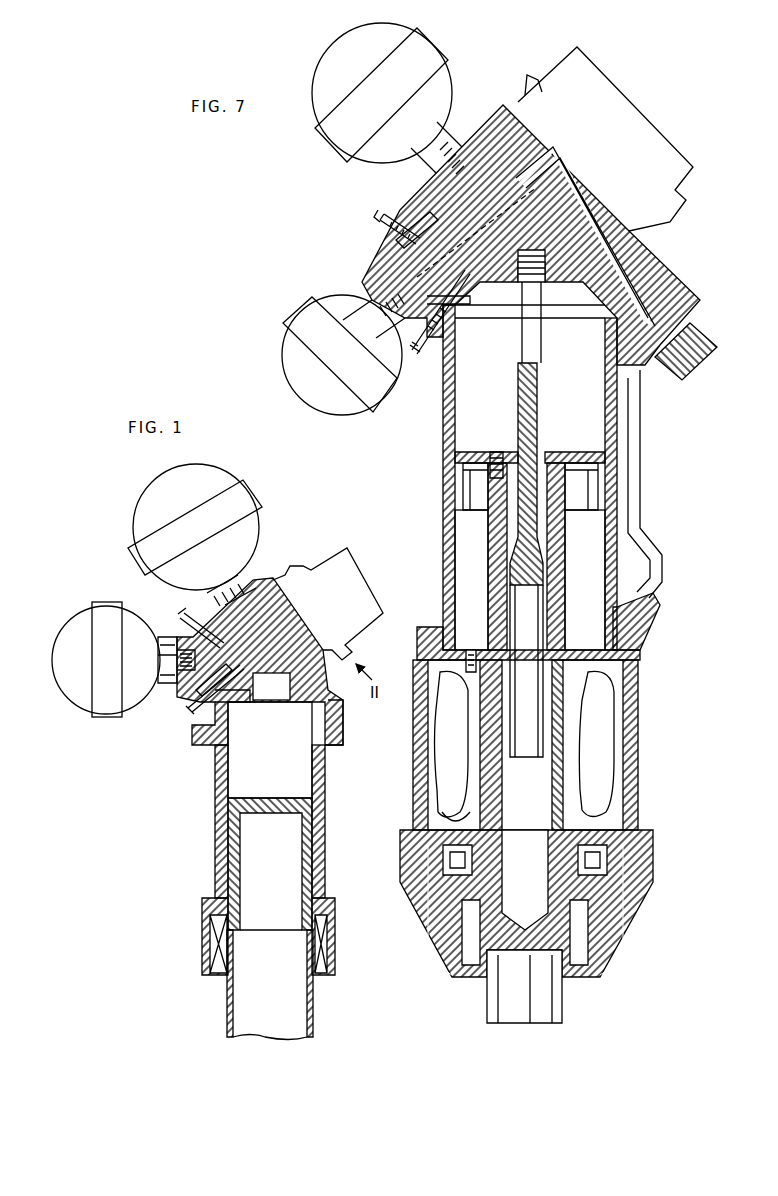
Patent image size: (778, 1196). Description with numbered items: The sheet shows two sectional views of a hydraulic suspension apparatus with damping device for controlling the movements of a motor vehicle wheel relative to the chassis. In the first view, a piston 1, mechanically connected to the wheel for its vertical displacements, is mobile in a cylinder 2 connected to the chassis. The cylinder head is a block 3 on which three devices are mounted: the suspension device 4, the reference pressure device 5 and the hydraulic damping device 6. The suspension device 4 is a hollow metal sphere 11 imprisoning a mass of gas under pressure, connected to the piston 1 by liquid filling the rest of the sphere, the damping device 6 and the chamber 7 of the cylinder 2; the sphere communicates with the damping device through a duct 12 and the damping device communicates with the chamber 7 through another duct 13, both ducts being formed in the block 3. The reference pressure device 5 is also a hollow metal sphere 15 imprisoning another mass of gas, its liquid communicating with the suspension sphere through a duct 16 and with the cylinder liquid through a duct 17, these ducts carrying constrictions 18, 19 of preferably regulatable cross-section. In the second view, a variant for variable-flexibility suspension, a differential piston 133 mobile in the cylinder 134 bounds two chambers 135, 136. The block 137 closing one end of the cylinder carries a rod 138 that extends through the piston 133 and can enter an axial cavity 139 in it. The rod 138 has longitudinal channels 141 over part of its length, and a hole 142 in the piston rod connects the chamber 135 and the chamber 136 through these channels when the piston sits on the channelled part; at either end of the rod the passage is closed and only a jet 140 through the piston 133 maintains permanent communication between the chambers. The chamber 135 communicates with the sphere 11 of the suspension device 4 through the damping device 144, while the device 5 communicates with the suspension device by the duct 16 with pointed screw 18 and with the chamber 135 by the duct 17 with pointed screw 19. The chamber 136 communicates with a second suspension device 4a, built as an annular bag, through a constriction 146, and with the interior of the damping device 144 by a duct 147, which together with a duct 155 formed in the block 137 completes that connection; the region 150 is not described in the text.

In FIG. 1, the piston 1 is at (308, 850).
In FIG. 1, the cylinder 2 is at (210, 784).
In FIG. 1, the block 3 is at (340, 716).
In FIG. 7, the suspension device 4 is at (381, 96).
In FIG. 1, the suspension device 4 is at (188, 519).
In FIG. 7, the second suspension device 4a is at (615, 730).
In FIG. 7, the reference pressure device 5 is at (324, 298).
In FIG. 1, the reference pressure device 5 is at (123, 656).
In FIG. 1, the damping device 6 is at (360, 557).
In FIG. 1, the chamber 7 is at (306, 764).
In FIG. 7, the hollow metal sphere 11 is at (387, 158).
In FIG. 1, the hollow metal sphere 11 is at (150, 484).
In FIG. 1, the duct 12 is at (292, 610).
In FIG. 1, the duct 13 is at (284, 656).
In FIG. 1, the hollow metal sphere 15 is at (80, 698).
In FIG. 7, the duct 16 is at (392, 252).
In FIG. 1, the duct 16 is at (186, 697).
In FIG. 7, the duct 17 is at (470, 300).
In FIG. 1, the duct 17 is at (242, 703).
In FIG. 7, the constriction 18 is at (378, 222).
In FIG. 1, the constriction 18 is at (180, 616).
In FIG. 7, the constriction 19 is at (462, 296).
In FIG. 1, the constriction 19 is at (188, 714).
In FIG. 7, the piston 133 is at (460, 480).
In FIG. 7, the cylinder 134 is at (508, 477).
In FIG. 7, the chamber 135 is at (465, 388).
In FIG. 7, the chamber 136 is at (462, 528).
In FIG. 7, the block 137 is at (380, 268).
In FIG. 7, the rod 138 is at (542, 326).
In FIG. 7, the axial cavity 139 is at (526, 926).
In FIG. 7, the jet 140 is at (496, 450).
In FIG. 7, the longitudinal channels 141 is at (546, 446).
In FIG. 7, the hole 142 is at (505, 523).
In FIG. 7, the damping device 144 is at (648, 108).
In FIG. 7, the constriction 146 is at (470, 648).
In FIG. 7, the duct 147 is at (640, 482).
In FIG. 7, the annular chamber 150 is at (562, 578).
In FIG. 7, the duct 155 is at (553, 155).